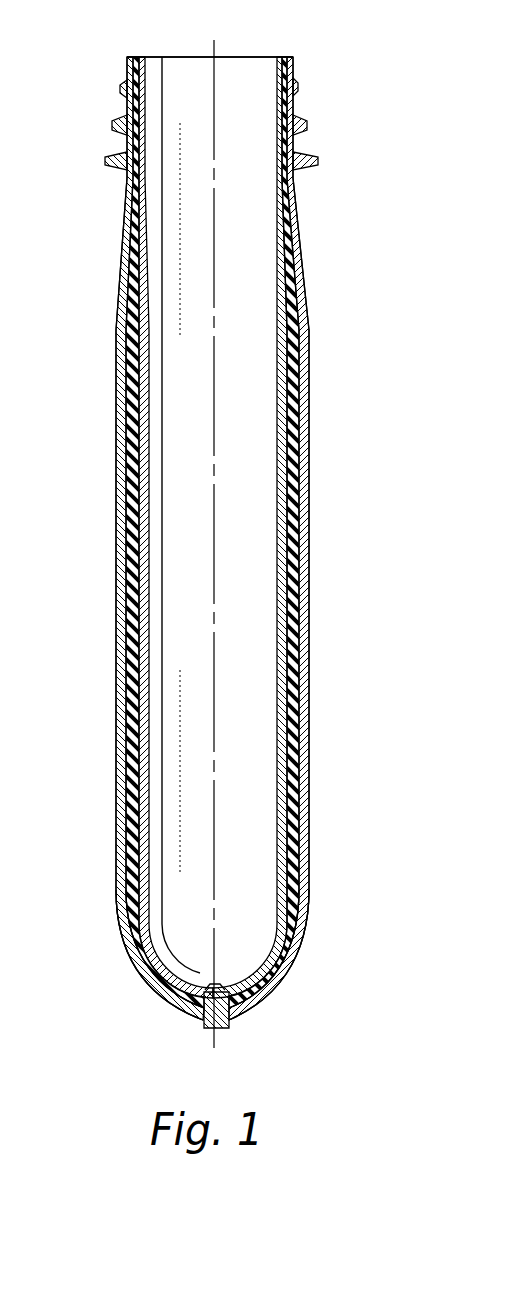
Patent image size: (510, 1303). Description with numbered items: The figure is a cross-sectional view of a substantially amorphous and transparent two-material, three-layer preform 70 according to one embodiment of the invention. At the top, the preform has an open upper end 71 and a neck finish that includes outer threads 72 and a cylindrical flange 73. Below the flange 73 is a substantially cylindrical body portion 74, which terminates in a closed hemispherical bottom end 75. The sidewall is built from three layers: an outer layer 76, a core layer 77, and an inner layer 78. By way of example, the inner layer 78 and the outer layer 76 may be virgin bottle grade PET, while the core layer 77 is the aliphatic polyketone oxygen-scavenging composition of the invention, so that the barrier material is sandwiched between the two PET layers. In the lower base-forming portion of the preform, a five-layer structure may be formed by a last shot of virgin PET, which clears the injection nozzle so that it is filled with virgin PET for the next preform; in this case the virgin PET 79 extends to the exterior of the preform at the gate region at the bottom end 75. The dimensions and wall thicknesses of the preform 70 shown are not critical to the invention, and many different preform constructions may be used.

The three-layer preform 70 is at (313, 270).
The open upper end 71 is at (243, 57).
The outer threads 72 is at (295, 86).
The cylindrical flange 73 is at (307, 167).
The body portion 74 is at (306, 432).
The closed hemispherical bottom end 75 is at (283, 990).
The outer layer 76 is at (117, 365).
The core layer 77 is at (129, 401).
The inner layer 78 is at (147, 450).
The virgin PET 79 is at (227, 1012).